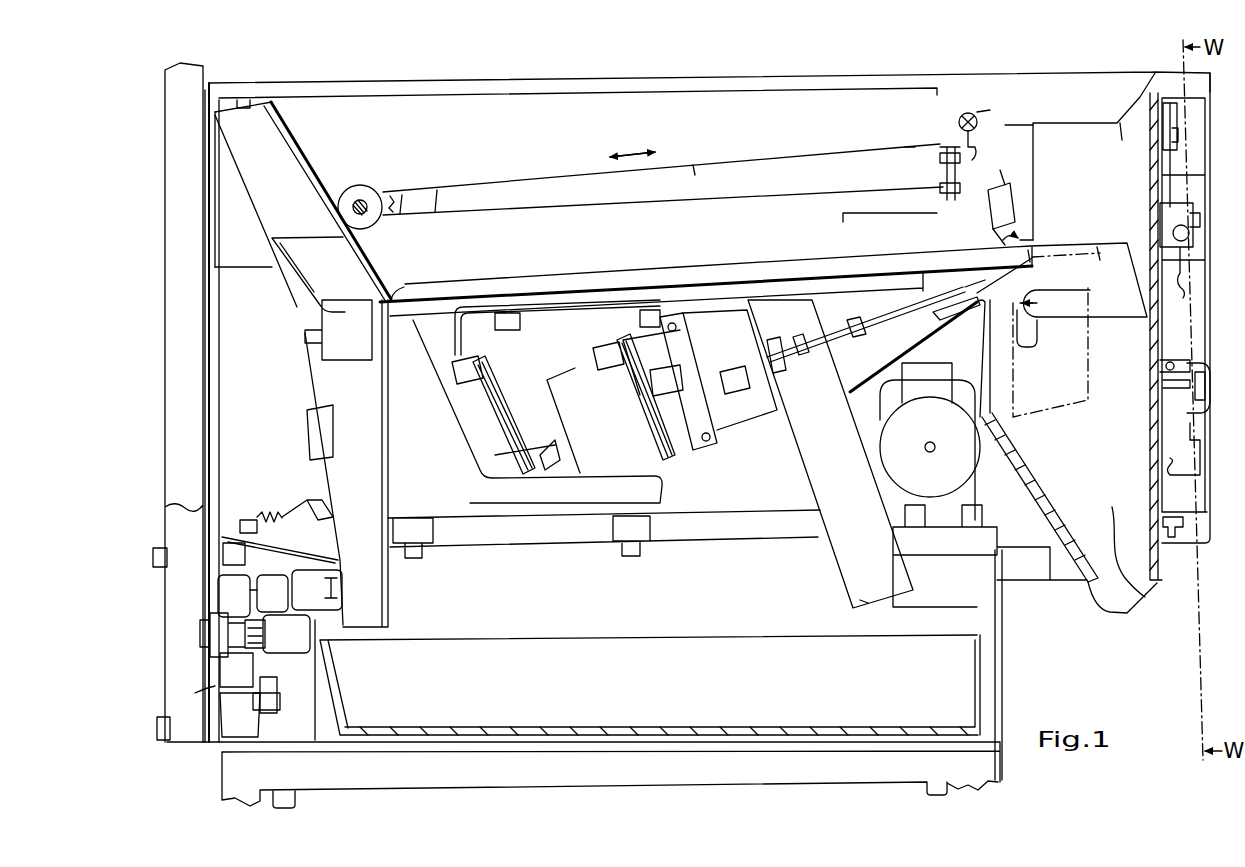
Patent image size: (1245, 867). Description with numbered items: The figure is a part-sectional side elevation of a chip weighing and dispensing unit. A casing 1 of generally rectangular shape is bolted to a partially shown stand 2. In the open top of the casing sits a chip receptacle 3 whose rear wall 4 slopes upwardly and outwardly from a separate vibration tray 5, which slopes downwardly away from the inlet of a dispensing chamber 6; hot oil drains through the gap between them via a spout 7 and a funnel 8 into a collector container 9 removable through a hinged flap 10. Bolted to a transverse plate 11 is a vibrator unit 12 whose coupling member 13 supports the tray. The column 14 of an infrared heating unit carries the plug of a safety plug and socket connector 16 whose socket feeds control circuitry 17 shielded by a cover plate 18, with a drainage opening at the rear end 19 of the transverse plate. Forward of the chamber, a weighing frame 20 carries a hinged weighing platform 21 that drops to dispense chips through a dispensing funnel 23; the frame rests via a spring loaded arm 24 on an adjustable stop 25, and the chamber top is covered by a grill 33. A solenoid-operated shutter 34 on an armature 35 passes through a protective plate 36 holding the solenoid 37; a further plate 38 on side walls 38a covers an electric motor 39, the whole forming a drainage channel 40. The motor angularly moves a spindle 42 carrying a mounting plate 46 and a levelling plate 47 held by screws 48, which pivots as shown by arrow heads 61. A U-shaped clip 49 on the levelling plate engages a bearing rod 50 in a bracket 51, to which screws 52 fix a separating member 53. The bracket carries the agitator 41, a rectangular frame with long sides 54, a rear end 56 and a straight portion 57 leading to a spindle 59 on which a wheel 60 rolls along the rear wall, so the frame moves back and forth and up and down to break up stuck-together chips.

The casing 1 is at (203, 449).
The stand 2 is at (990, 760).
The chip receptacle 3 is at (334, 118).
The rear wall 4 is at (317, 193).
The vibration tray 5 is at (513, 297).
The dispensing chamber 6 is at (1102, 199).
The spout 7 is at (310, 352).
The funnel 8 is at (330, 461).
The collector container 9 is at (642, 697).
The hinged flap 10 is at (1002, 672).
The transverse plate 11 is at (540, 553).
The vibrator unit 12 is at (415, 462).
The coupling member 13 is at (558, 312).
The column 14 is at (185, 371).
The plug and socket connector 16 is at (200, 650).
The control circuitry 17 is at (300, 650).
The cover plate 18 is at (287, 540).
The rear end of transverse plate 19 is at (393, 600).
The weighing frame 20 is at (1200, 325).
The weighing platform 21 is at (1145, 327).
The dispensing funnel 23 is at (1145, 597).
The spring loaded arm 24 is at (1205, 378).
The stop 25 is at (1203, 427).
The grill 33 is at (1130, 145).
The shutter 34 is at (975, 275).
The solenoid armature 35 is at (815, 335).
The protective plate 36 is at (800, 455).
The solenoid 37 is at (724, 377).
The protective plate 38 is at (930, 328).
The side walls 38a is at (868, 605).
The electric motor 39 is at (1030, 556).
The channel 40 is at (840, 527).
The agitator 41 is at (549, 172).
The spindle 42 is at (977, 112).
The plate 46 is at (1005, 125).
The levelling plate 47 is at (1012, 225).
The screws 48 is at (1005, 175).
The U-shaped clip 49 is at (995, 160).
The bearing rod 50 is at (1001, 235).
The bracket 51 is at (950, 140).
The screws 52 is at (910, 147).
The separating member 53 is at (866, 216).
The long sides 54 is at (695, 172).
The rear end 56 is at (952, 123).
The straight portion 57 is at (430, 198).
The spindle 59 is at (361, 205).
The wheel 60 is at (373, 188).
The arrow heads 61 is at (1032, 243).